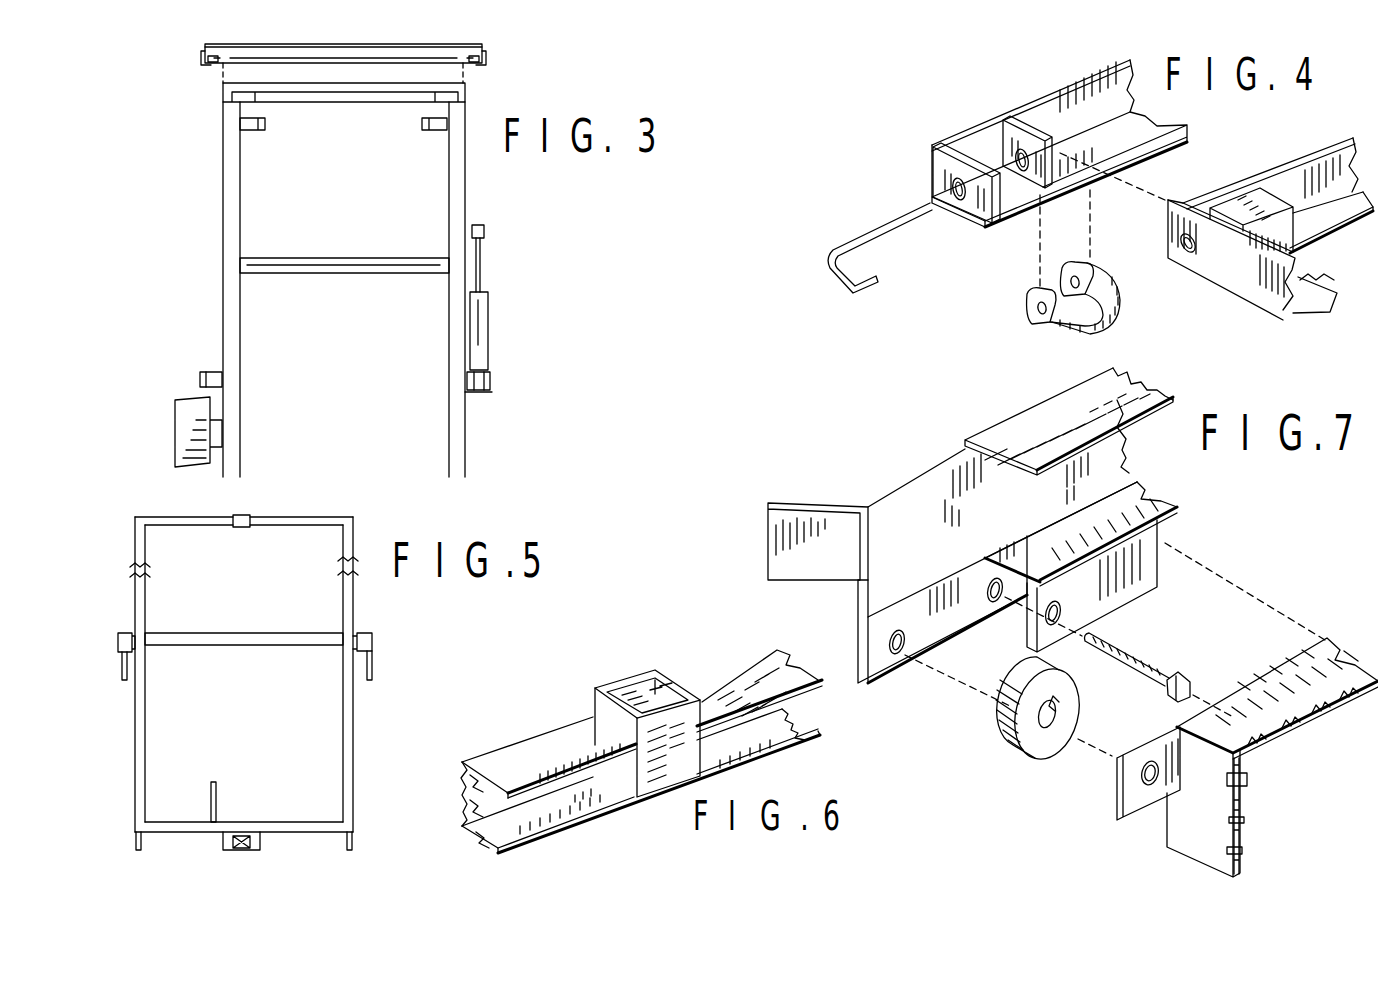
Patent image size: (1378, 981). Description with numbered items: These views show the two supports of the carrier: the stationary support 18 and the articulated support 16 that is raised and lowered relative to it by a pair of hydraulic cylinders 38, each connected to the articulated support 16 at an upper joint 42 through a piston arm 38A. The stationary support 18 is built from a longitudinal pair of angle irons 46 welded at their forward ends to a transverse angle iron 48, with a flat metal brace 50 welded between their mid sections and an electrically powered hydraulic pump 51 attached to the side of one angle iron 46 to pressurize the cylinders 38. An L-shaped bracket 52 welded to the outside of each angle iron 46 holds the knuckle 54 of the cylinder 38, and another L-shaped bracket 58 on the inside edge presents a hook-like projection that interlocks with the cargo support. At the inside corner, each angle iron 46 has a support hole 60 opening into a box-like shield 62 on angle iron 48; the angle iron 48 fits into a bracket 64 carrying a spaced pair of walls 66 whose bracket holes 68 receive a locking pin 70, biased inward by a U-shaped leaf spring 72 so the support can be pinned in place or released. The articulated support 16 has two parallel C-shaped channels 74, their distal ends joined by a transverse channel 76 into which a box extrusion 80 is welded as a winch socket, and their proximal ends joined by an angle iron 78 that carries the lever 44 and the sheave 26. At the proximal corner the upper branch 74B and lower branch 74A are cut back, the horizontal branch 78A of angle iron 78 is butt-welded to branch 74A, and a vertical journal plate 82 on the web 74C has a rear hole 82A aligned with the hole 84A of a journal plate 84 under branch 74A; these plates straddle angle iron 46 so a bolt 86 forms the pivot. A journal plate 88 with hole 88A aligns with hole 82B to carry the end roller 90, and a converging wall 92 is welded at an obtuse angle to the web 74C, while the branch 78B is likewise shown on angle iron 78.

In FIG. 5, the articulated support 16 is at (259, 678).
In FIG. 3, the stationary support 18 is at (337, 256).
In FIG. 4, the stationary support 18 is at (1100, 194).
In FIG. 5, the sheave 26 is at (245, 848).
In FIG. 3, the hydraulic cylinder 38 is at (486, 332).
In FIG. 3, the piston arm 38A is at (483, 262).
In FIG. 5, the piston arm 38A is at (121, 680).
In FIG. 5, the upper joint 42 is at (118, 637).
In FIG. 5, the lever 44 is at (217, 797).
In FIG. 3, the angle iron 46 is at (222, 347).
In FIG. 4, the angle iron 46 is at (1258, 270).
In FIG. 3, the transverse angle iron 48 is at (405, 78).
In FIG. 4, the transverse angle iron 48 is at (1348, 138).
In FIG. 3, the flat metal brace 50 is at (357, 273).
In FIG. 3, the electrically powered hydraulic pump 51 is at (175, 428).
In FIG. 3, the L-shaped bracket 52 is at (202, 380).
In FIG. 3, the knuckle 54 is at (486, 372).
In FIG. 3, the L-shaped bracket 58 is at (268, 130).
In FIG. 4, the support hole 60 is at (1193, 253).
In FIG. 4, the box-like shield 62 is at (1245, 208).
In FIG. 3, the bracket 64 is at (352, 36).
In FIG. 4, the bracket 64 is at (1073, 85).
In FIG. 4, the walls 66 is at (1020, 150).
In FIG. 4, the bracket hole 68 is at (930, 164).
In FIG. 4, the locking pin 70 is at (893, 228).
In FIG. 4, the U-shaped leaf spring 72 is at (1067, 323).
In FIG. 5, the C-shaped channel 74 is at (135, 597).
In FIG. 7, the C-shaped channel 74 is at (1048, 488).
In FIG. 7, the lower branch 74A is at (1142, 503).
In FIG. 7, the upper branch 74B is at (1140, 393).
In FIG. 7, the web 74C is at (942, 482).
In FIG. 5, the transverse channel 76 is at (217, 525).
In FIG. 6, the transverse channel 76 is at (752, 668).
In FIG. 5, the angle iron 78 is at (302, 832).
In FIG. 7, the angle iron 78 is at (1272, 757).
In FIG. 7, the horizontal branch 78A is at (1300, 727).
In FIG. 7, the bolt 78B is at (1218, 810).
In FIG. 5, the box extrusion 80 is at (248, 522).
In FIG. 6, the box extrusion 80 is at (647, 672).
In FIG. 7, the vertical journal plate 82 is at (942, 639).
In FIG. 7, the rear hole 82A is at (997, 603).
In FIG. 7, the hole 82B is at (890, 630).
In FIG. 7, the vertical journal plate 84 is at (1131, 579).
In FIG. 7, the hole 84A is at (1062, 615).
In FIG. 7, the bolt 86 is at (1147, 662).
In FIG. 7, the vertical journal plate 88 is at (1108, 798).
In FIG. 7, the hole 88A is at (1143, 783).
In FIG. 5, the end roller 90 is at (137, 845).
In FIG. 7, the end roller 90 is at (1032, 765).
In FIG. 7, the converging wall 92 is at (828, 503).